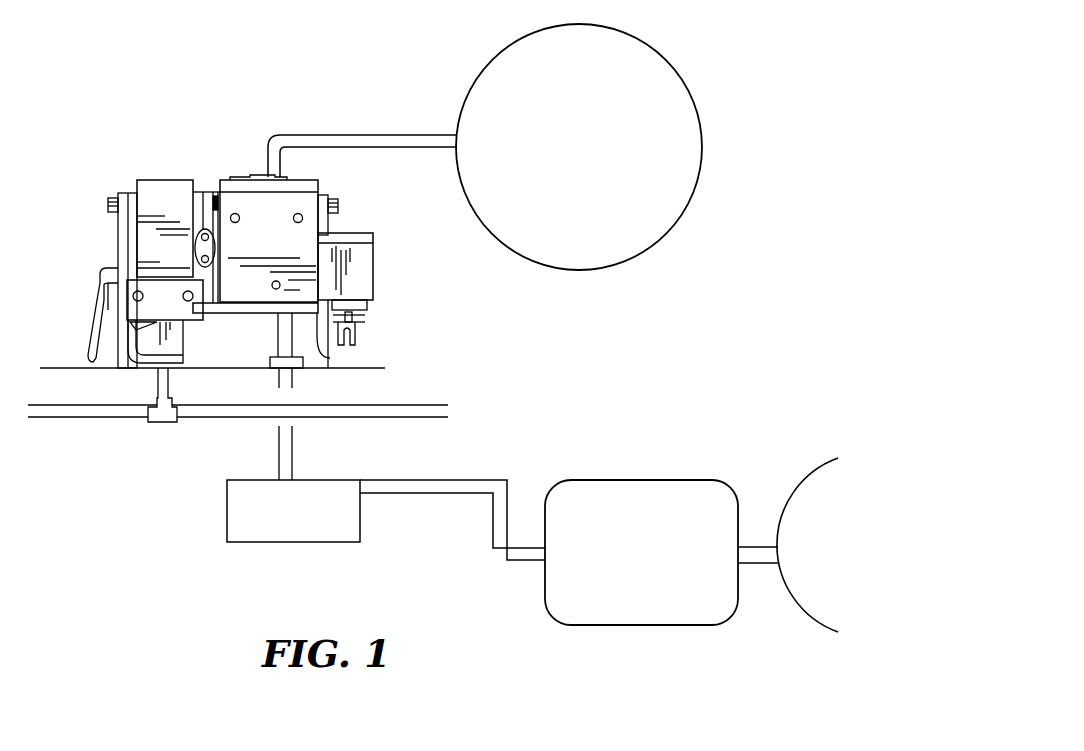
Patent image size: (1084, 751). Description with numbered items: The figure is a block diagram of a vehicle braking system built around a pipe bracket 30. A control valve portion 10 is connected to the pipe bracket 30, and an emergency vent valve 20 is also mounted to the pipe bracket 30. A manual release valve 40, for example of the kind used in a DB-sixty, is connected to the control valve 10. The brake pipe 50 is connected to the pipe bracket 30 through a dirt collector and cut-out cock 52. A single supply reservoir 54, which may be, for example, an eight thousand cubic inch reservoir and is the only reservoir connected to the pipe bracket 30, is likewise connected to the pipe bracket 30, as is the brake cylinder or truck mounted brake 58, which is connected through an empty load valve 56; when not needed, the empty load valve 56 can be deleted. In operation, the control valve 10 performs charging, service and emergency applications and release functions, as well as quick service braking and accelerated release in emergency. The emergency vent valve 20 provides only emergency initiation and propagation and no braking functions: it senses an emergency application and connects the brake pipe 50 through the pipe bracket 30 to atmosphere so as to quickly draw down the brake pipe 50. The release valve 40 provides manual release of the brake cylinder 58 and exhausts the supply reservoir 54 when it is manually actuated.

The control valve portion 10 is at (282, 205).
The emergency vent valve 20 is at (153, 197).
The pipe bracket 30 is at (203, 200).
The manual release valve 40 is at (360, 272).
The brake pipe 50 is at (112, 414).
The dirt collector and cut-out cock 52 is at (100, 277).
The supply reservoir 54 is at (660, 220).
The empty load valve 56 is at (277, 530).
The brake cylinder 58 is at (735, 634).